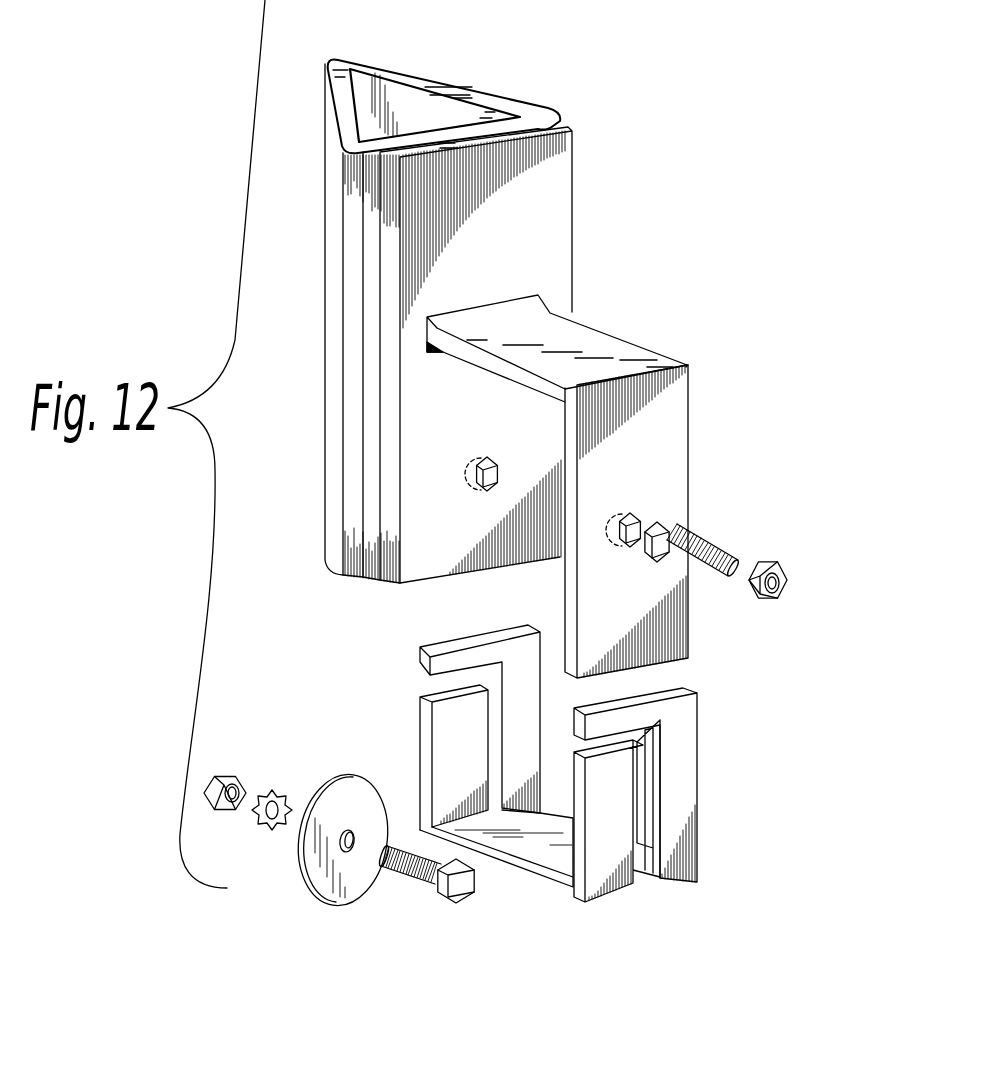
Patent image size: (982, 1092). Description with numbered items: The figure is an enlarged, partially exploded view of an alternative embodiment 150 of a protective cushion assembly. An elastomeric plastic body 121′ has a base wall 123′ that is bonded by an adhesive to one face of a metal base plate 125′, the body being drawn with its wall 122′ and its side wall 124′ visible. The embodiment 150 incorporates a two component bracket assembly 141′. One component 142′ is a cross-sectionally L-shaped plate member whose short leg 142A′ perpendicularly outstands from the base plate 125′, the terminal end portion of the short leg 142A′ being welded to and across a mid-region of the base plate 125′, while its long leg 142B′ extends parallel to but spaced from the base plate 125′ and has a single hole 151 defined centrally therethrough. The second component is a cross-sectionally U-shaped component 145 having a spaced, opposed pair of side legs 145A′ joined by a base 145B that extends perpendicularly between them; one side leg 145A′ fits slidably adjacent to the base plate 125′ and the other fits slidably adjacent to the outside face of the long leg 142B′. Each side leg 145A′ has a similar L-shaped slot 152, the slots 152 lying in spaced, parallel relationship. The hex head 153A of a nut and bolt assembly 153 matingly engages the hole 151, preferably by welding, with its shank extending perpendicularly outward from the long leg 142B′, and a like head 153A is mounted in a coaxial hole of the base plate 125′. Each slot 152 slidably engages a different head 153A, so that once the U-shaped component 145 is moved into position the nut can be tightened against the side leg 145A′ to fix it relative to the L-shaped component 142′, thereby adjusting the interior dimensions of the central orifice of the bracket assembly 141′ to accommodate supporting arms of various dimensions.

The elastomeric plastic body 121′ is at (382, 62).
The long leg 124′ is at (417, 80).
The base wall 123′ is at (489, 126).
The post wall 122′ is at (561, 0).
The metal base plate 125′ is at (565, 161).
The protective cushion assembly embodiment 150 is at (694, 236).
The L-shaped component 142′ is at (615, 469).
The short leg 142A′ is at (622, 352).
The long leg 142B′ is at (677, 407).
The bracket assembly 141′ is at (693, 364).
The hole 151 is at (643, 530).
The hex head 153A is at (657, 537).
The nut and bolt assembly 153 is at (730, 550).
The L-shaped slot 152 is at (437, 684).
The side leg 145A′ is at (452, 718).
The base 145B is at (525, 850).
The U-shaped component 145 is at (562, 824).